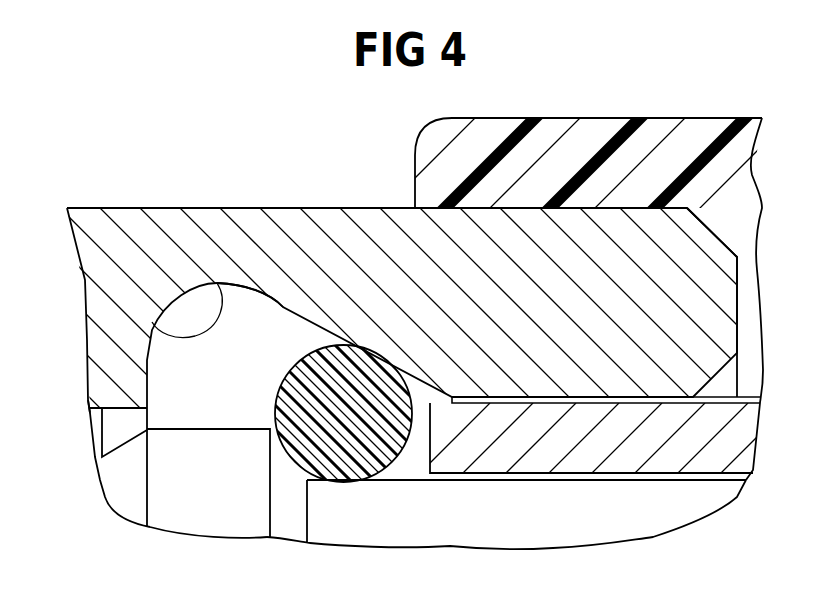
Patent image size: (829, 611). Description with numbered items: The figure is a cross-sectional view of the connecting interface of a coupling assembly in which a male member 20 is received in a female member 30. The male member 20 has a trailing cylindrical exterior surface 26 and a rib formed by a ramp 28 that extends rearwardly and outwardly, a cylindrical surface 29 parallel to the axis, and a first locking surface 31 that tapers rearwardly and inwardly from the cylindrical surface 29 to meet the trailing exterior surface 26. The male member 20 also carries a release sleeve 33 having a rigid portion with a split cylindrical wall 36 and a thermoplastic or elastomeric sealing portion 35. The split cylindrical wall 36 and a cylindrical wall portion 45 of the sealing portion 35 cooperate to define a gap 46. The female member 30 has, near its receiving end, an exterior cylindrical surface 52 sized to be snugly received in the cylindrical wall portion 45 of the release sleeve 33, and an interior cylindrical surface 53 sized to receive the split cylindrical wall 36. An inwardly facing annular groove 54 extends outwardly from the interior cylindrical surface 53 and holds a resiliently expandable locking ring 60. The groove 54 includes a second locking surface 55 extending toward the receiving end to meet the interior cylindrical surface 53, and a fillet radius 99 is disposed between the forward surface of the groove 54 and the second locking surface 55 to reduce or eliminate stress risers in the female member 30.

The male member 20 is at (110, 525).
The trailing cylindrical exterior surface 26 is at (594, 527).
The ramp 28 is at (107, 497).
The cylindrical surface 29 is at (192, 517).
The female member 30 is at (182, 208).
The first locking surface 31 is at (272, 521).
The release sleeve 33 is at (682, 117).
The sealing portion 35 is at (497, 132).
The split cylindrical wall 36 is at (723, 450).
The cylindrical wall portion 45 is at (543, 118).
The gap 46 is at (722, 236).
The exterior cylindrical surface 52 is at (328, 208).
The interior cylindrical surface 53 is at (665, 402).
The annular groove 54 is at (173, 382).
The second locking surface 55 is at (283, 307).
The locking ring 60 is at (367, 477).
The fillet radius 99 is at (132, 323).